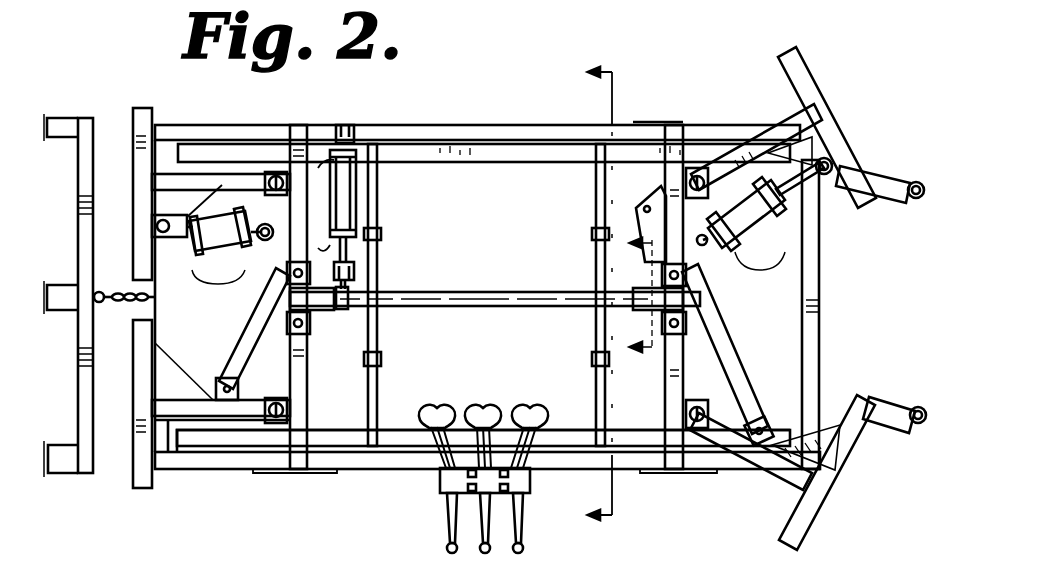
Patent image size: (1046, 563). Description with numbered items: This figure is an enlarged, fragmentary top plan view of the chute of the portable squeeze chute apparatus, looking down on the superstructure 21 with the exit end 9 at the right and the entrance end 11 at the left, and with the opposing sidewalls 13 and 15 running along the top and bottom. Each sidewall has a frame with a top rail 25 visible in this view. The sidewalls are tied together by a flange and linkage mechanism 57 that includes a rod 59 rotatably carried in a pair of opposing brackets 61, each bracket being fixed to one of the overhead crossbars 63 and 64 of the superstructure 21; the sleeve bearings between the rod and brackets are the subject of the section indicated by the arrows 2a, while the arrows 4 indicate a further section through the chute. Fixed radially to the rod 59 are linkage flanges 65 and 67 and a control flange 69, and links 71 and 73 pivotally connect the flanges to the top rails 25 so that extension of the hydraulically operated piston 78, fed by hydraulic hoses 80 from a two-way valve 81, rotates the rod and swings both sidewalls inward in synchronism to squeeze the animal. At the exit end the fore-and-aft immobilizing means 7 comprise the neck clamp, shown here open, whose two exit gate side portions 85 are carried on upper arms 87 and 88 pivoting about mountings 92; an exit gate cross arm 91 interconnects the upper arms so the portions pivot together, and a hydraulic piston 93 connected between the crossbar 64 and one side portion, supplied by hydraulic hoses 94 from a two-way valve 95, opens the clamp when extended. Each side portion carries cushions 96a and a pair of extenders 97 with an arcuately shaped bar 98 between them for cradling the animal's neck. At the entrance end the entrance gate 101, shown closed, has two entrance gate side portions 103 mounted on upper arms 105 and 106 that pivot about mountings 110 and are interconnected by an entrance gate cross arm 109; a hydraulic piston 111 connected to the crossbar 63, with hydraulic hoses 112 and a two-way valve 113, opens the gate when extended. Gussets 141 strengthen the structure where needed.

The section arrow 2a is at (633, 285).
The section arrow 4 is at (613, 295).
The fore-and-aft immobilizing means 7 is at (137, 195).
The exit end 9 is at (818, 300).
The entrance end 11 is at (145, 308).
The sidewall 13 is at (612, 440).
The sidewall 15 is at (622, 150).
The superstructure 21 is at (404, 132).
The top rail 25 is at (568, 152).
The flange and linkage mechanism 57 is at (380, 276).
The rod 59 is at (497, 292).
The brackets 61 is at (327, 324).
The overhead crossbar 63 is at (302, 418).
The overhead crossbar 64 is at (666, 390).
The linkage flange 65 is at (595, 330).
The linkage flange 67 is at (380, 340).
The control flange 69 is at (346, 310).
The link 71 is at (378, 205).
The link 73 is at (366, 410).
The hydraulically operated piston 78 is at (350, 158).
The hydraulic hoses 80 is at (318, 248).
The two-way valve 81 is at (480, 497).
The exit gate side portions 85 is at (814, 74).
The upper arm 87 is at (784, 128).
The upper arm 88 is at (790, 492).
The exit gate cross arm 91 is at (744, 382).
The mountings 92 is at (709, 185).
The hydraulic piston 93 is at (764, 204).
The hydraulic hoses 94 is at (648, 360).
The two-way valve 95 is at (532, 486).
The cushions 96a is at (860, 146).
The extenders 97 is at (894, 175).
The arcuately shaped bar or strap 98 is at (915, 198).
The entrance gate 101 is at (132, 266).
The entrance gate side portions 103 is at (146, 143).
The upper arm 105 is at (188, 181).
The upper arm 106 is at (210, 402).
The entrance gate cross arm 109 is at (265, 334).
The mountings 110 is at (268, 186).
The hydraulic piston 111 is at (224, 236).
The hydraulic hoses 112 is at (328, 369).
The two-way valve 113 is at (440, 484).
The gussets 141 is at (166, 366).